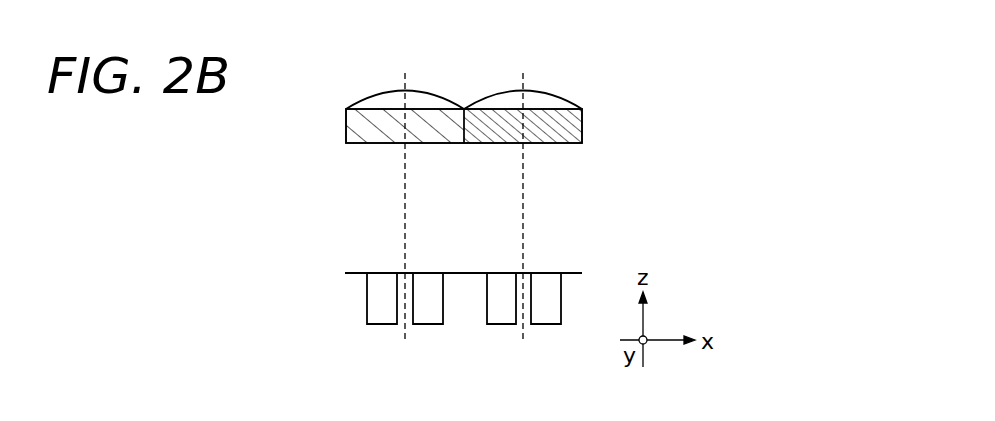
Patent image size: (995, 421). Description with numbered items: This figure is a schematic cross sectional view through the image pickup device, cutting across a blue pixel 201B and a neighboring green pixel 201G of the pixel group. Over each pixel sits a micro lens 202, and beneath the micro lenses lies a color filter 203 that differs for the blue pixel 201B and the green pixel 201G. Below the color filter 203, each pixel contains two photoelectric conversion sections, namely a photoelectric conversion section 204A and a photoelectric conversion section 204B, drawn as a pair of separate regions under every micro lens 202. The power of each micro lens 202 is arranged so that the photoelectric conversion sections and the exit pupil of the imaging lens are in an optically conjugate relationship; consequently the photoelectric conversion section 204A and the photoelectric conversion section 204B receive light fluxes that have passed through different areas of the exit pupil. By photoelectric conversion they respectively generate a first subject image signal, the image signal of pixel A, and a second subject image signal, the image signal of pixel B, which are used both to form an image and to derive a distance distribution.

The blue pixel 201B is at (405, 73).
The green pixel 201G is at (523, 73).
The micro lens 202 is at (560, 96).
The color filter 203 is at (346, 120).
The photoelectric conversion section 204A is at (430, 322).
The photoelectric conversion section 204B is at (380, 322).